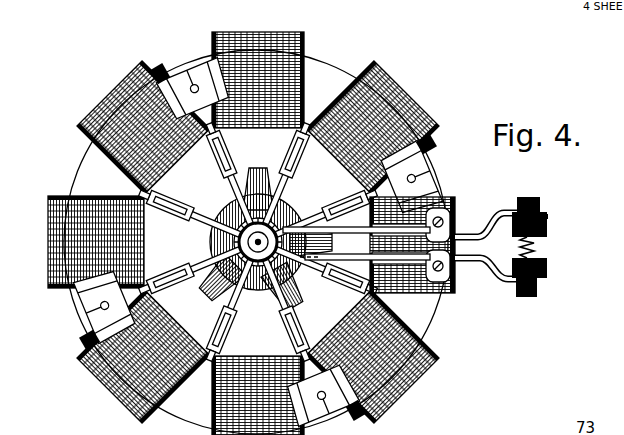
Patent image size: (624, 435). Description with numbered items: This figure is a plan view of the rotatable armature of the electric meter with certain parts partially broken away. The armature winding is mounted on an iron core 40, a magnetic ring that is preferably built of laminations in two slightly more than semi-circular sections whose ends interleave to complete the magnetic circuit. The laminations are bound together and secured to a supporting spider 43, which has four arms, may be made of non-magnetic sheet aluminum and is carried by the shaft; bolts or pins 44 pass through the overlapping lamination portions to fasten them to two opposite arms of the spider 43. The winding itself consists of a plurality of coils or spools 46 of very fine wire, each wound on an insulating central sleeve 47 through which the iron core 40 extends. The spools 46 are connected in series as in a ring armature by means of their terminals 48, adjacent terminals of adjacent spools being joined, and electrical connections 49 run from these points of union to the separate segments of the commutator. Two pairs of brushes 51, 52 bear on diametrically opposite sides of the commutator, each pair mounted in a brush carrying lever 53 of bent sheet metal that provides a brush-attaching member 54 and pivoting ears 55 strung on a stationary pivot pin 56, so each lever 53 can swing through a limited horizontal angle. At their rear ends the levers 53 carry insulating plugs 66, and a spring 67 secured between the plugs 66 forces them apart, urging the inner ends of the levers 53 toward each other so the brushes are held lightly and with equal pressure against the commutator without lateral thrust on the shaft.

The iron core 40 is at (100, 304).
The supporting spider 43 is at (263, 200).
The bolts or pins 44 is at (191, 86).
The coils or spools 46 is at (115, 93).
The insulating central sleeve 47 is at (165, 72).
The terminals 48 is at (167, 265).
The electrical connections 49 is at (238, 193).
The pair of brushes 51 is at (334, 229).
The pair of brushes 52 is at (332, 257).
The brush carrying lever 53 is at (495, 240).
The brush-attaching member 54 is at (438, 197).
The pivoting ears 55 is at (465, 218).
The pivot pins 56 is at (463, 200).
The insulating plugs 66 is at (547, 222).
The spring 67 is at (540, 250).